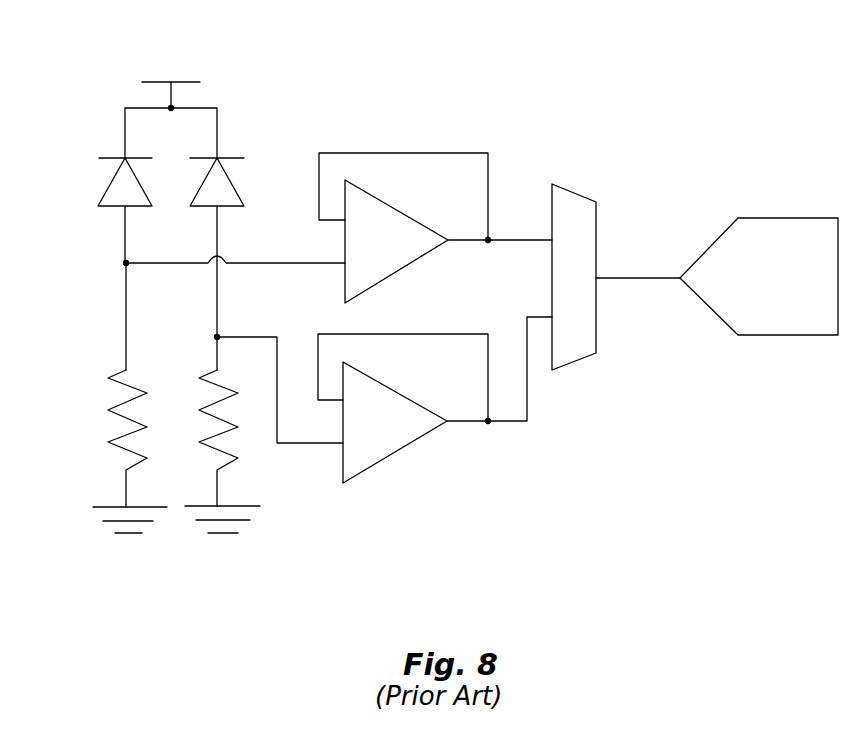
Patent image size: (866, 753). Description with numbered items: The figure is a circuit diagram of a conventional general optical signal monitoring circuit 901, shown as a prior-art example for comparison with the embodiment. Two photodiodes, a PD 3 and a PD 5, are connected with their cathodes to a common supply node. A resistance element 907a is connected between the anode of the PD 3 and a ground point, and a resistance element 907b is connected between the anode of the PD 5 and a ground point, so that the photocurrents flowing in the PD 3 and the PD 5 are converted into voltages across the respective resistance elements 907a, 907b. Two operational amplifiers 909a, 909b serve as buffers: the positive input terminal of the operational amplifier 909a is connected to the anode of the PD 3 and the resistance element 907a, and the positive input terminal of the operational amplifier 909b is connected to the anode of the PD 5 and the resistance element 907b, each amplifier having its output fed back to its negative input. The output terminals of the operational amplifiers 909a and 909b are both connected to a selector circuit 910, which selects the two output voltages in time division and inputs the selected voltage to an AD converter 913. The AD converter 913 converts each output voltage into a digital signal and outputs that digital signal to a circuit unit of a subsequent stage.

The optical signal monitoring circuit 901 is at (437, 288).
The PD 3 is at (143, 183).
The PD 5 is at (232, 183).
The resistance element 907a is at (110, 412).
The resistance element 907b is at (206, 418).
The operational amplifier 909a is at (405, 268).
The operational amplifier 909b is at (395, 452).
The selector circuit 910 is at (573, 362).
The AD converter 913 is at (782, 337).